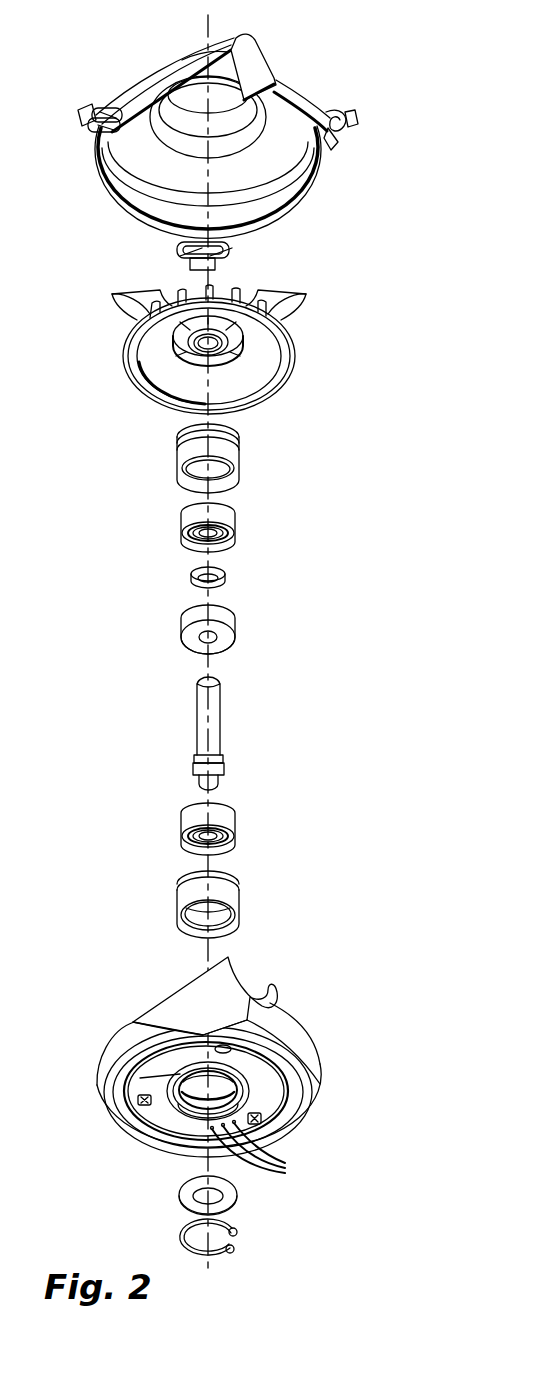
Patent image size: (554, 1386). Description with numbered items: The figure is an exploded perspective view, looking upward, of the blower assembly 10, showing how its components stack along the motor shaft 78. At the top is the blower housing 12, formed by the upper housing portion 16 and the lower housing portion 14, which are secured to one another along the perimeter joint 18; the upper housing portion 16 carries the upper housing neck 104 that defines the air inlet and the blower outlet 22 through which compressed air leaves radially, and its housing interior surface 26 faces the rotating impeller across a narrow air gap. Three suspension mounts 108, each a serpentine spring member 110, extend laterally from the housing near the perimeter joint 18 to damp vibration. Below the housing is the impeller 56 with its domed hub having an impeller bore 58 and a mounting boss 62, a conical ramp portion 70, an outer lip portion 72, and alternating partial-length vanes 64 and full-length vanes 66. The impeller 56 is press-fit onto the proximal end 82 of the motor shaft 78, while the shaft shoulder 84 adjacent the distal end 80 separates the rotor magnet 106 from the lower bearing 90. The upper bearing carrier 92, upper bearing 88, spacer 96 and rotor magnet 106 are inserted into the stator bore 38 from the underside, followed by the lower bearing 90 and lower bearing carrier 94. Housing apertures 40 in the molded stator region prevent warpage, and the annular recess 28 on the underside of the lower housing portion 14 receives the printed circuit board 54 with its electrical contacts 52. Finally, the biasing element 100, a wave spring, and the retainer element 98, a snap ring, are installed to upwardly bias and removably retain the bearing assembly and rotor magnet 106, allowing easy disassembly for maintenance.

The blower assembly 10 is at (367, 70).
The blower housing 12 is at (218, 595).
The lower housing portion 14 is at (208, 1097).
The upper housing portion 16 is at (224, 534).
The perimeter joint 18 is at (282, 228).
The blower outlet 22 is at (247, 57).
The housing interior surface 26 is at (132, 165).
The annular recess 28 is at (272, 1096).
The stator bore 38 is at (260, 1112).
The housing apertures 40 is at (236, 1040).
The electrical contacts 52 is at (266, 1157).
The printed circuit board 54 is at (140, 1078).
The impeller 56 is at (207, 356).
The impeller bore 58 is at (155, 378).
The mounting boss 62 is at (200, 352).
The partial-length vanes 64 is at (134, 304).
The full-length vanes 66 is at (290, 304).
The ramp portion 70 is at (152, 380).
The lip portion 72 is at (250, 407).
The motor shaft 78 is at (209, 729).
The distal end 80 is at (200, 785).
The proximal end 82 is at (204, 679).
The shaft shoulder 84 is at (223, 758).
The upper bearing 88 is at (234, 522).
The lower bearing 90 is at (236, 826).
The upper bearing carrier 92 is at (240, 455).
The lower bearing carrier 94 is at (240, 892).
The spacer 96 is at (226, 576).
The retainer element 98 is at (180, 1239).
The biasing element 100 is at (180, 1194).
The upper housing neck 104 is at (192, 63).
The rotor magnet 106 is at (236, 622).
The suspension mounts 108 is at (112, 108).
The spring member 110 is at (340, 146).